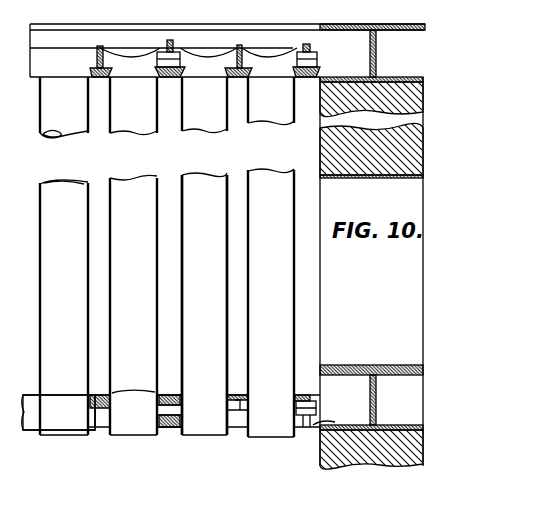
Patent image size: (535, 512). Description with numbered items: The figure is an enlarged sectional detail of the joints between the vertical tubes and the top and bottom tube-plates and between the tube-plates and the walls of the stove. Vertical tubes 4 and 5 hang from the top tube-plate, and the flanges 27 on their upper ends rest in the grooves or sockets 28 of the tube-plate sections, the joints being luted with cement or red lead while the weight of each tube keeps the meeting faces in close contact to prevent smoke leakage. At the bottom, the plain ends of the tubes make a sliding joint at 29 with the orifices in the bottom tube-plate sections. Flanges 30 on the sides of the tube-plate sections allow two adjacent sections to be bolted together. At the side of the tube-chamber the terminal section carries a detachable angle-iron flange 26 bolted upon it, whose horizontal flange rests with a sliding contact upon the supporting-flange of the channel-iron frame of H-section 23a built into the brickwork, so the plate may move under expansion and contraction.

The tube 4 is at (279, 303).
The tube 5 is at (204, 305).
The T-shaped support member 23a is at (376, 44).
The detachable angle-iron flange 26 is at (316, 75).
The flanges on the upper ends of the vertical tubes 27 is at (97, 68).
The grooves or sockets of the tube-plates 28 is at (238, 78).
The sliding joint 29 is at (112, 393).
The flanges on the side of the tube-plate sections 30 is at (170, 40).